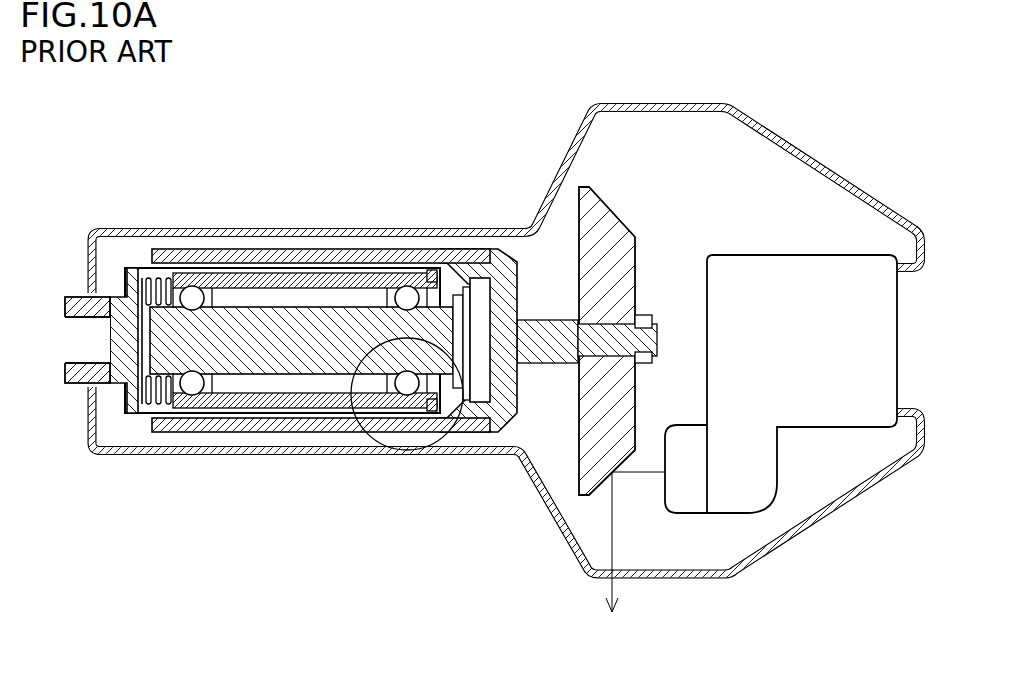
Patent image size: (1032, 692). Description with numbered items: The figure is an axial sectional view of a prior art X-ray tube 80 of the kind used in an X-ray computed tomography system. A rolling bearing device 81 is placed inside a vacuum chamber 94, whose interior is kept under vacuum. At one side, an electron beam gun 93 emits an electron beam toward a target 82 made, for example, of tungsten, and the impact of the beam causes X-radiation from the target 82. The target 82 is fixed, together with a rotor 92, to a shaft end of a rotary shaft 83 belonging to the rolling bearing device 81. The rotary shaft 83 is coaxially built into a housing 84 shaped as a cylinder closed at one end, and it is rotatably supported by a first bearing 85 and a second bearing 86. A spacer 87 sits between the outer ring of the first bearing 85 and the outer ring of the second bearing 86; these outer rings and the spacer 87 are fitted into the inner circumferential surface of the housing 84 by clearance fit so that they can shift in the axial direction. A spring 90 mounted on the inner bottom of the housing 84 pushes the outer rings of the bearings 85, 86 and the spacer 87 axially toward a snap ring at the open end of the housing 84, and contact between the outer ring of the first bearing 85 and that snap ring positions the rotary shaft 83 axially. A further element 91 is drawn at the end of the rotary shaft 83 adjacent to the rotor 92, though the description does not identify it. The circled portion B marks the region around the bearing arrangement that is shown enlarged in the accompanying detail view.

The X-ray tube 80 is at (469, 352).
The rolling bearing device 81 is at (293, 416).
The target 82 is at (610, 204).
The rotary shaft 83 is at (360, 312).
The housing 84 is at (177, 408).
The first bearing 85 is at (400, 270).
The second bearing 86 is at (197, 273).
The spacer 87 is at (287, 285).
The spring 90 is at (143, 398).
The thrust disc 91 is at (481, 285).
The rotor 92 is at (205, 433).
The electron beam gun 93 is at (693, 505).
The vacuum chamber 94 is at (805, 530).
The portion B is at (391, 453).